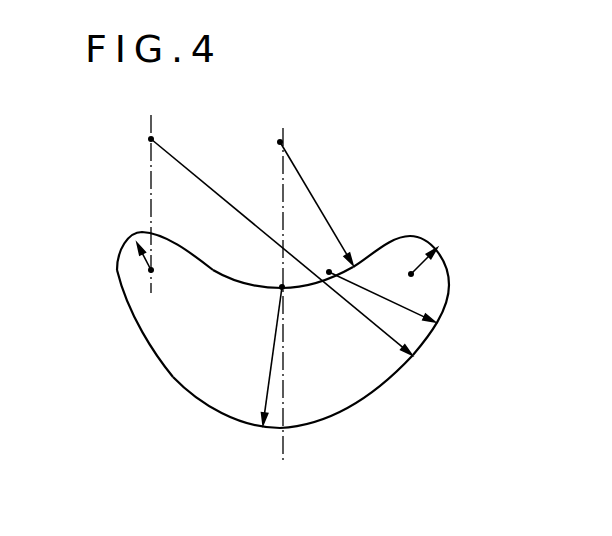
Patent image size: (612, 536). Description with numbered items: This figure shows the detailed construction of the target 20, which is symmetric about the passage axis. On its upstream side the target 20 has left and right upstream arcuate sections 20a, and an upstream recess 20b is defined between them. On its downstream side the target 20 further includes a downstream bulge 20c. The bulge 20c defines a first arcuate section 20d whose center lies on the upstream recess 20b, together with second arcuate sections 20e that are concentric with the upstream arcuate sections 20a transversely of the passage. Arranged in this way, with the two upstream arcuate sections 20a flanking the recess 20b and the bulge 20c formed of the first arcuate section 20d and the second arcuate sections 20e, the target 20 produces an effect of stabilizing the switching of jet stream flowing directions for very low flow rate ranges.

The target 20 is at (290, 315).
The upstream arcuate sections 20a is at (122, 252).
The upstream recess 20b is at (252, 267).
The downstream bulge 20c is at (242, 451).
The first arcuate section 20d is at (330, 433).
The second arcuate sections 20e is at (413, 357).